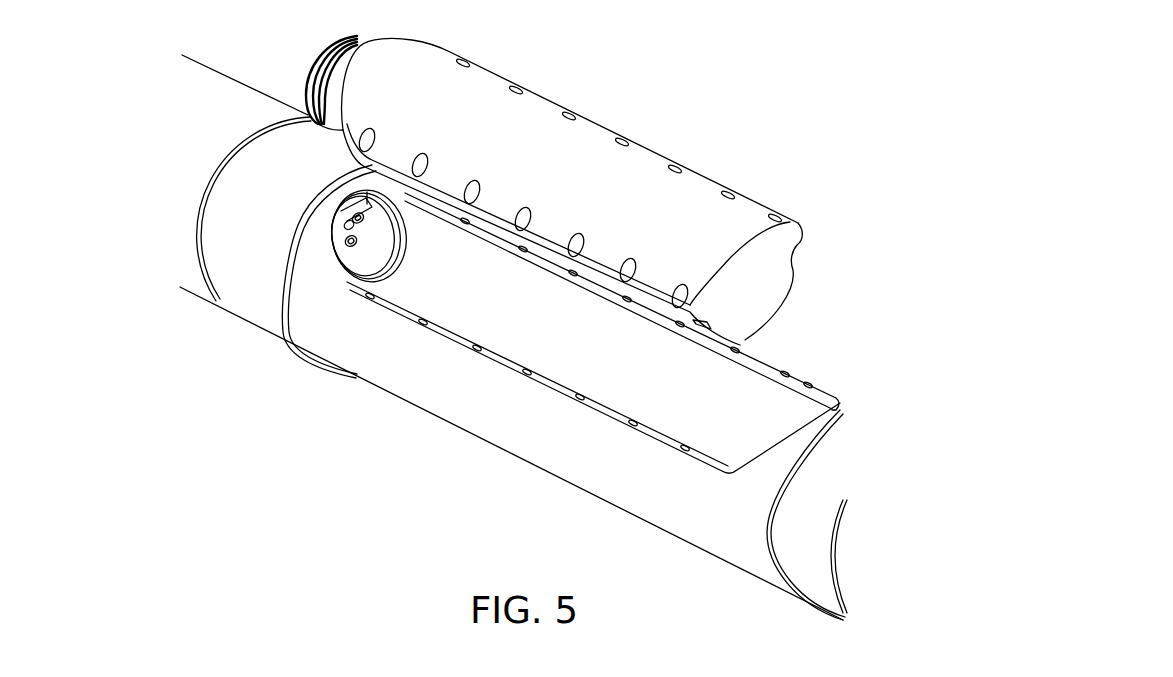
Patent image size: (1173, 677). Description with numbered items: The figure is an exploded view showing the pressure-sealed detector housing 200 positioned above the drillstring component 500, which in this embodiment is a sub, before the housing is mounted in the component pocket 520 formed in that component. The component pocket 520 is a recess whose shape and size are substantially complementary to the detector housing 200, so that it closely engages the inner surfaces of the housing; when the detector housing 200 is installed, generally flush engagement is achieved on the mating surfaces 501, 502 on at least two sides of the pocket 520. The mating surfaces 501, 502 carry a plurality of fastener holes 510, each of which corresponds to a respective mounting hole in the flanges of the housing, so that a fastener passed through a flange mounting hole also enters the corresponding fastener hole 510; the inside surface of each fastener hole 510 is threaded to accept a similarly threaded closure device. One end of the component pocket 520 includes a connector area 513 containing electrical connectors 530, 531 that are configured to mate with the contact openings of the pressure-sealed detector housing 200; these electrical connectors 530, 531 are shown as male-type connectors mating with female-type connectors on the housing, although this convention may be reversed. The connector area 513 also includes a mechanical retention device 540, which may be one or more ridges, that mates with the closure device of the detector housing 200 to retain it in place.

The pressure-sealed detector housing 200 is at (687, 122).
The drillstring component 500 is at (603, 497).
The mating surface 501 is at (813, 393).
The mating surface 502 is at (720, 468).
The fastener hole 510 is at (781, 371).
The connector area 513 is at (369, 262).
The component pocket 520 is at (742, 385).
The electrical connector 530 is at (350, 216).
The electrical connector 531 is at (346, 243).
The mechanical retention device 540 is at (397, 247).